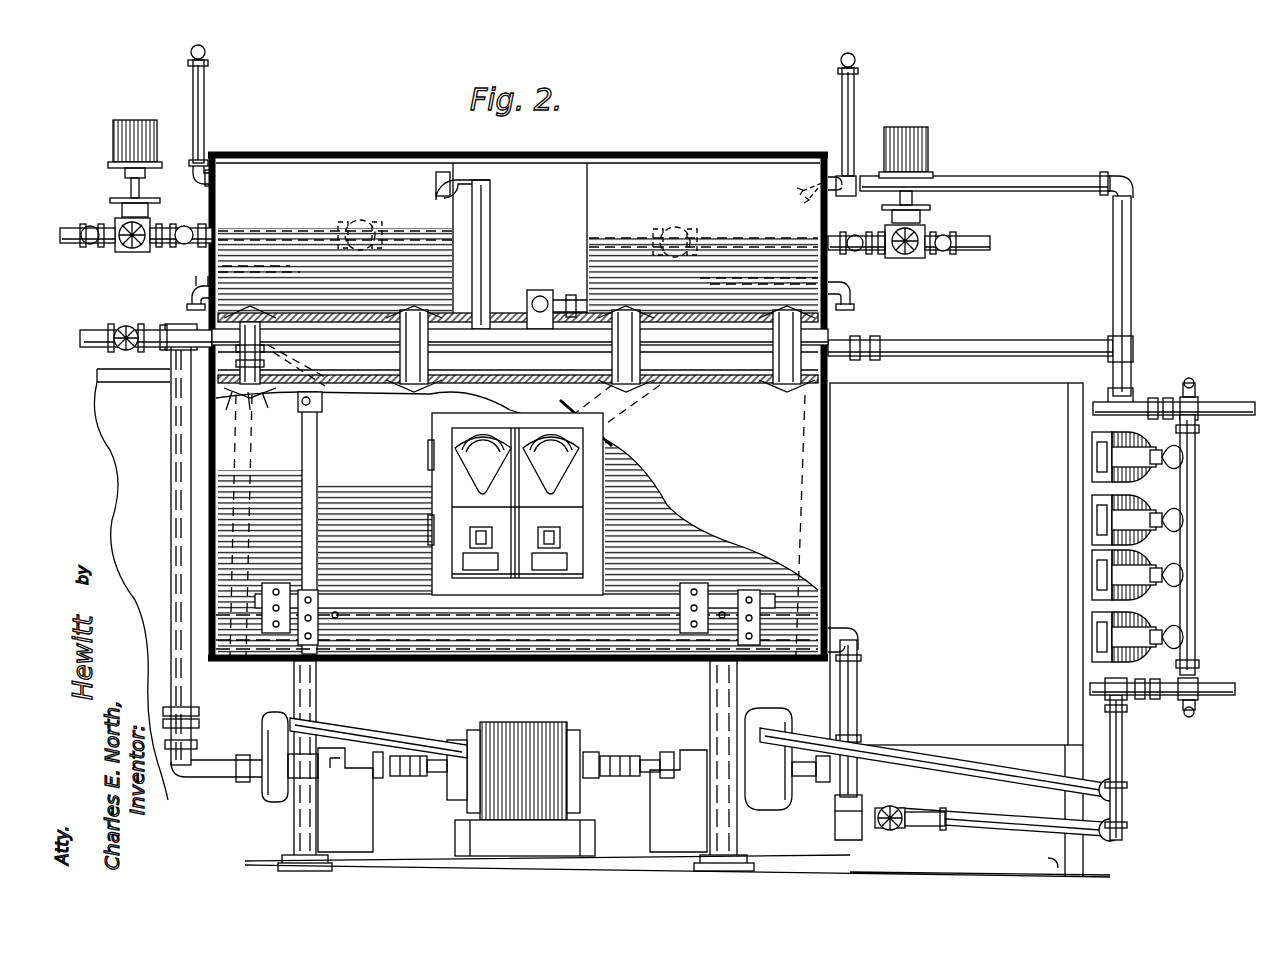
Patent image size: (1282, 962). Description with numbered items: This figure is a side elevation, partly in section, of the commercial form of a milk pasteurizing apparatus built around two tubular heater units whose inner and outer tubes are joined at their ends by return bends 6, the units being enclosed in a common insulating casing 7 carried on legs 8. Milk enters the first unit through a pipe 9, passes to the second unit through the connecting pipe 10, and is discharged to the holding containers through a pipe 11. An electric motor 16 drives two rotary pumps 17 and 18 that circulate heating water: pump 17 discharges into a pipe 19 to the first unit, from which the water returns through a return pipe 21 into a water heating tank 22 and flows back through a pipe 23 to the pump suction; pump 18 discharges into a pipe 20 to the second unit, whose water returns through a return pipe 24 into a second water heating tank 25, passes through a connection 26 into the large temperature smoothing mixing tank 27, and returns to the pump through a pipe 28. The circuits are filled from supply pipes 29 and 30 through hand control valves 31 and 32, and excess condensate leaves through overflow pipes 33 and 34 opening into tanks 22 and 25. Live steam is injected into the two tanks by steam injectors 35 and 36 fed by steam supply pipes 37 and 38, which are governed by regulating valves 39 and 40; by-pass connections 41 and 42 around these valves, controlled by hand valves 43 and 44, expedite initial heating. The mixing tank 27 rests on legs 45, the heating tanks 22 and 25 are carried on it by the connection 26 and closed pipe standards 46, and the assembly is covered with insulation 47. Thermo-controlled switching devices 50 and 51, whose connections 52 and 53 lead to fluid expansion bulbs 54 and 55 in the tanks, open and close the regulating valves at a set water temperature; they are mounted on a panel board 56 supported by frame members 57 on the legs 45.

The return bends 6 is at (1092, 562).
The insulating casing 7 is at (1020, 383).
The legs 8 is at (1050, 858).
The pipe 9 is at (1240, 402).
The connecting pipe 10 is at (1197, 560).
The pipe 11 is at (1228, 683).
The electric motor 16 is at (530, 722).
The rotary pump 17 is at (272, 785).
The rotary pump 18 is at (748, 820).
The pipe 19 is at (416, 740).
The pipe 20 is at (778, 730).
The return pipe 21 is at (1133, 243).
The water heating tank 22 is at (708, 176).
The pipe 23 is at (543, 292).
The return pipe 24 is at (492, 222).
The water heating tank 25 is at (322, 172).
The connection 26 is at (262, 342).
The mixing tank 27 is at (218, 440).
The pipe 28 is at (858, 688).
The pipe 29 is at (94, 330).
The pipe 30 is at (912, 832).
The hand control valve 31 is at (128, 326).
The hand control valve 32 is at (884, 832).
The overflow pipe 33 is at (842, 100).
The overflow pipe 34 is at (206, 104).
The steam injector 35 is at (680, 228).
The steam injector 36 is at (370, 224).
The steam supply pipe 37 is at (992, 243).
The steam supply pipe 38 is at (70, 228).
The regulating valve 39 is at (918, 207).
The regulating valve 40 is at (128, 200).
The by-pass connection 41 is at (931, 252).
The by-pass connection 42 is at (176, 246).
The hand valve 43 is at (903, 258).
The hand valve 44 is at (128, 252).
The legs 45 is at (318, 690).
The closed pipe standards 46 is at (430, 360).
The insulation 47 is at (560, 157).
The thermo-controlled electric switching device 50 is at (578, 492).
The thermo-controlled electric switching device 51 is at (458, 512).
The thermometer connection 52 is at (852, 300).
The thermometer connection 53 is at (190, 296).
The fluid expansion bulb 54 is at (766, 278).
The fluid expansion bulb 55 is at (280, 272).
The panel board 56 is at (600, 552).
The frame members 57 is at (318, 476).